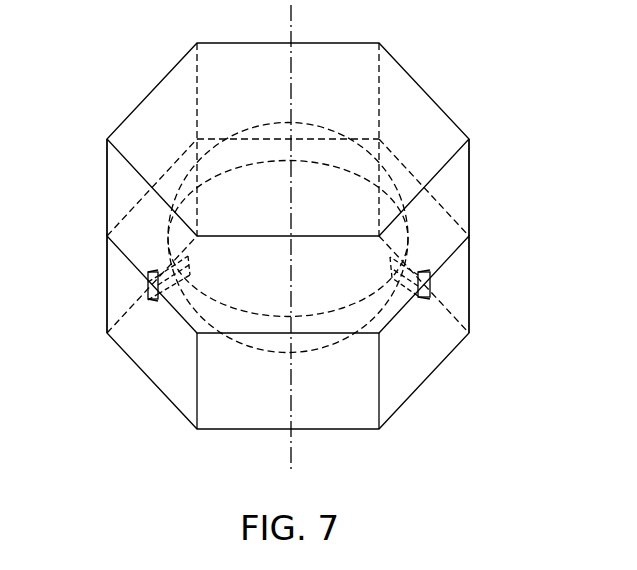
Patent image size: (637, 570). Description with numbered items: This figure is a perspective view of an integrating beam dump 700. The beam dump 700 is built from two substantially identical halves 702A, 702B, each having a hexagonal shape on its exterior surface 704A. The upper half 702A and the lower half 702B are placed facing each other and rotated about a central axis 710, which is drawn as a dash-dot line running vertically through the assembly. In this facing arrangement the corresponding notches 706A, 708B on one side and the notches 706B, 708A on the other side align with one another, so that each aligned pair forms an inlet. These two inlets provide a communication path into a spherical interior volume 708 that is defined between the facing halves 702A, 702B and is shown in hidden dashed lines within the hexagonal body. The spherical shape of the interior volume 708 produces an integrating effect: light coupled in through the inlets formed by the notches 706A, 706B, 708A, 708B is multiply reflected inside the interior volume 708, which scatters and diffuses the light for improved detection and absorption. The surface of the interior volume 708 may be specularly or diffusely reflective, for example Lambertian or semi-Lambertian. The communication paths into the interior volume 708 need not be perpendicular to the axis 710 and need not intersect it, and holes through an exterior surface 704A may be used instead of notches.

The integrating beam dump 700 is at (303, 238).
The first half 702A is at (433, 72).
The second half 702B is at (119, 386).
The exterior surface 704A is at (107, 177).
The notch 706A is at (427, 279).
The notch 706B is at (156, 296).
The spherical interior volume 708 is at (238, 178).
The notch 708A is at (151, 281).
The notch 708B is at (430, 296).
The axis 710 is at (291, 447).